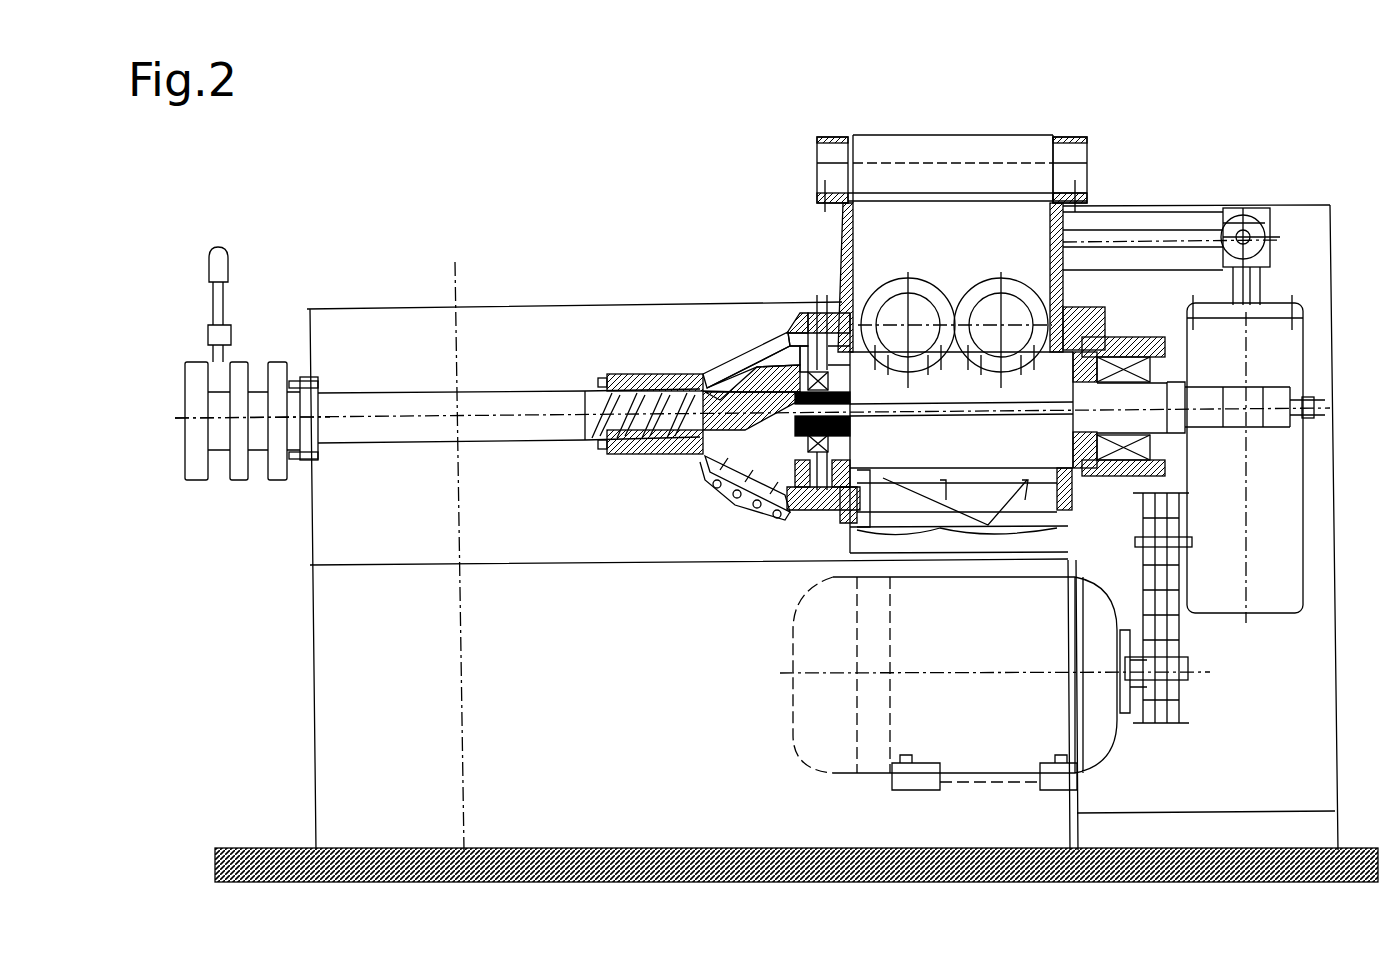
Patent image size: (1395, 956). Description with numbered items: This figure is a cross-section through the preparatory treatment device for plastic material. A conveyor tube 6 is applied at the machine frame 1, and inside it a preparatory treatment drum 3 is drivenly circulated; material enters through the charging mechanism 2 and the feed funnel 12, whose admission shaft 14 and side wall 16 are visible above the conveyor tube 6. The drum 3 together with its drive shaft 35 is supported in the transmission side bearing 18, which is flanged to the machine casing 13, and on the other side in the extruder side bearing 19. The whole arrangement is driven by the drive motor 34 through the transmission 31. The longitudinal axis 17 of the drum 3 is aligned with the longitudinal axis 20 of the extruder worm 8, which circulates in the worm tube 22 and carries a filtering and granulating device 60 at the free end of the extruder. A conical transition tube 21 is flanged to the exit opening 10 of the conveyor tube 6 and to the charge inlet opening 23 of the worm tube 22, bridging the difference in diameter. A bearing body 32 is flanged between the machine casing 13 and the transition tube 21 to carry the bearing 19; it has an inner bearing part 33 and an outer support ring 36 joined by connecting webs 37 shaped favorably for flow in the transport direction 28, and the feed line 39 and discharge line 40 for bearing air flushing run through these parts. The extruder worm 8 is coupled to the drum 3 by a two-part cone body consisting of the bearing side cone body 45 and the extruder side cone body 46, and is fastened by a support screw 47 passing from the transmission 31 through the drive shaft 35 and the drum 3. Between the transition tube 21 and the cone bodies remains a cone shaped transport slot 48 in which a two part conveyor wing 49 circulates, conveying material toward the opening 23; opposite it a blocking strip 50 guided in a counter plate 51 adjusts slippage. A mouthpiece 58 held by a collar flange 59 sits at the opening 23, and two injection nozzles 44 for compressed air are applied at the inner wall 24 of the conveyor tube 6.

The machine frame 1 is at (357, 772).
The charging mechanism 2 is at (956, 295).
The preparatory treatment drum 3 is at (936, 463).
The conveyor tube 6 is at (845, 512).
The extruder worm 8 is at (580, 395).
The exit opening of the conveyor tube 10 is at (832, 512).
The feed funnel 12 is at (1072, 130).
The machine casing 13 is at (1082, 308).
The admission shaft of the feed funnel 14 is at (917, 247).
The side wall of the feed funnel 16 is at (1068, 242).
The longitudinal axis of the preparatory treatment drum 17 is at (1022, 410).
The transmission side bearing 18 is at (1145, 337).
The extruder side bearing 19 is at (818, 338).
The longitudinal axis of the extruder worm 20 is at (588, 443).
The transition tube 21 is at (763, 364).
The worm tube 22 is at (432, 437).
The charge inlet opening of the worm tube 23 is at (700, 392).
The inner wall of the conveyor tube 24 is at (858, 512).
The transport direction 28 is at (866, 552).
The transmission 31 is at (1290, 525).
The bearing body 32 is at (787, 512).
The inner bearing part 33 is at (812, 345).
The drive motor 34 is at (990, 740).
The drive shaft 35 is at (1150, 387).
The outer support ring 36 is at (803, 512).
The connecting web 37 is at (840, 318).
The feed line for the bearing air flushing 39 is at (822, 295).
The discharge line for the bearing air flushing 40 is at (818, 512).
The injection nozzle 44 is at (977, 515).
The bearing side cone body 45 is at (775, 352).
The extruder side cone body 46 is at (728, 372).
The support screw 47 is at (902, 416).
The cone shaped transport slot 48 is at (800, 347).
The two part conveyor wing 49 is at (710, 473).
The blocking strip 50 is at (733, 480).
The counter plate 51 is at (755, 487).
The mouthpiece 58 is at (630, 373).
The collar flange 59 is at (620, 453).
The filtering and/or granulating device 60 is at (243, 358).